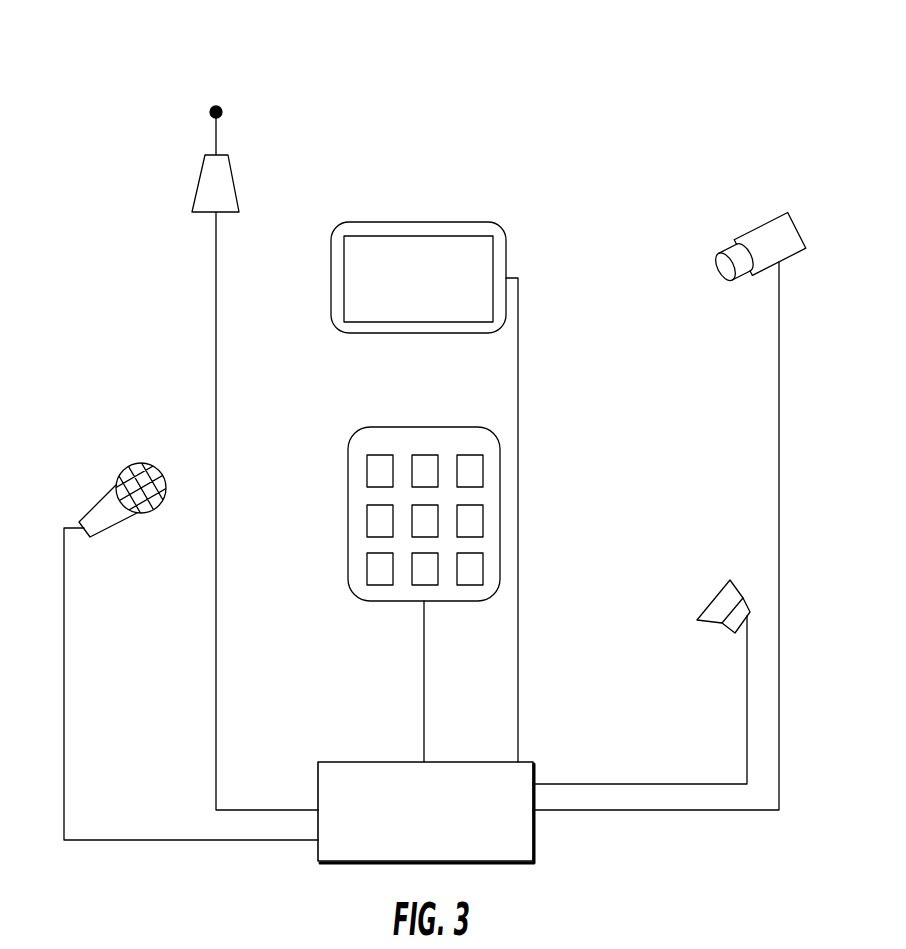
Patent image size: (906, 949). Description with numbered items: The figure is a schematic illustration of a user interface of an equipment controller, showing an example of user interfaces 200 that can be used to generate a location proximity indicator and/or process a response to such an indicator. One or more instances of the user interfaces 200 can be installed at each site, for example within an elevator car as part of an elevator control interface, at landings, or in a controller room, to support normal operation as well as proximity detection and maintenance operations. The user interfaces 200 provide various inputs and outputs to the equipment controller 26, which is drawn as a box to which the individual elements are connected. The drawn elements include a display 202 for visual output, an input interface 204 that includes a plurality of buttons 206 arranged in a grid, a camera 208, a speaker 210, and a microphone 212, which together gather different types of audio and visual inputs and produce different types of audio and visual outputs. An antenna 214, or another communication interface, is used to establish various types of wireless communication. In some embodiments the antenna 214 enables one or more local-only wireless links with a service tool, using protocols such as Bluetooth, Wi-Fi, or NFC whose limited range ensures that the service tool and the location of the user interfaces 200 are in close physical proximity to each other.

The user interfaces 200 is at (378, 106).
The display 202 is at (464, 222).
The input interface 204 is at (348, 455).
The buttons 206 is at (370, 496).
The camera 208 is at (781, 222).
The speaker 210 is at (730, 580).
The microphone 212 is at (110, 486).
The antenna 214 is at (199, 178).
The equipment controller 26 is at (438, 825).